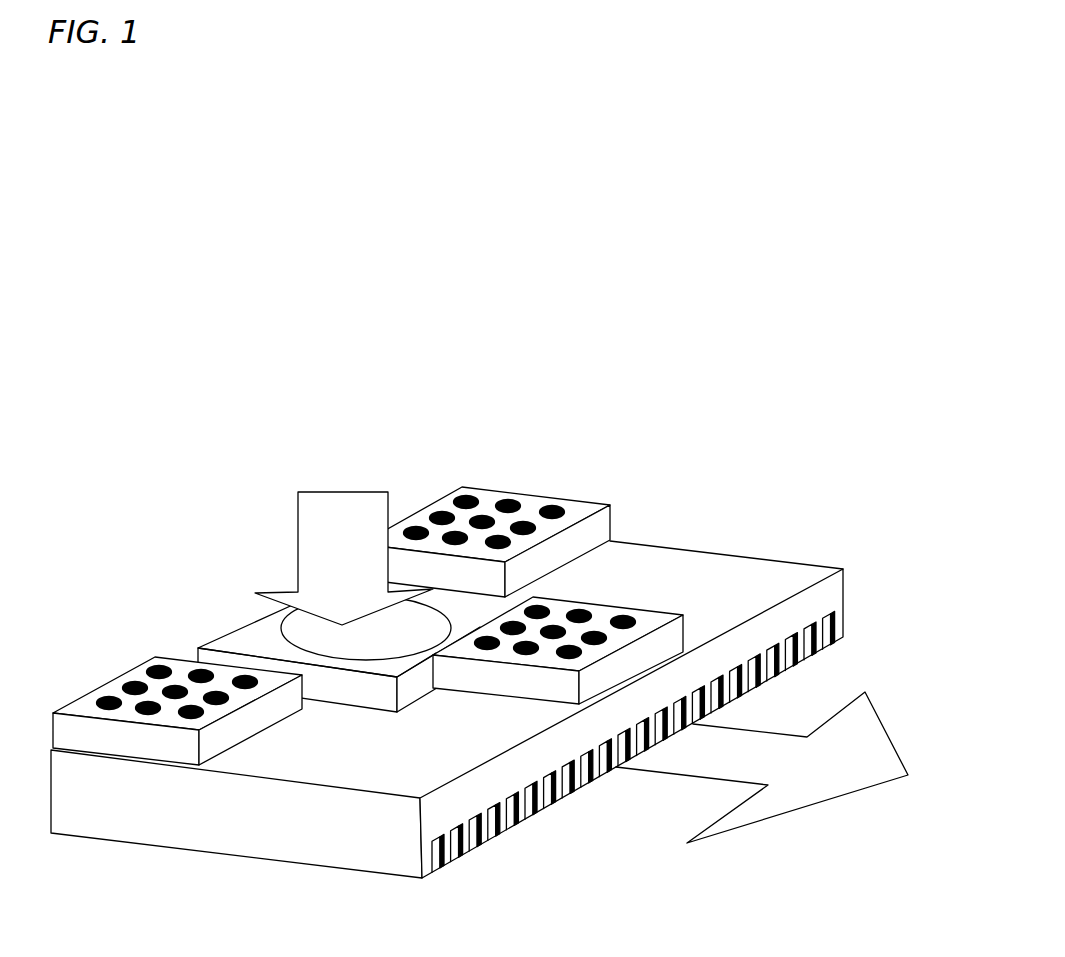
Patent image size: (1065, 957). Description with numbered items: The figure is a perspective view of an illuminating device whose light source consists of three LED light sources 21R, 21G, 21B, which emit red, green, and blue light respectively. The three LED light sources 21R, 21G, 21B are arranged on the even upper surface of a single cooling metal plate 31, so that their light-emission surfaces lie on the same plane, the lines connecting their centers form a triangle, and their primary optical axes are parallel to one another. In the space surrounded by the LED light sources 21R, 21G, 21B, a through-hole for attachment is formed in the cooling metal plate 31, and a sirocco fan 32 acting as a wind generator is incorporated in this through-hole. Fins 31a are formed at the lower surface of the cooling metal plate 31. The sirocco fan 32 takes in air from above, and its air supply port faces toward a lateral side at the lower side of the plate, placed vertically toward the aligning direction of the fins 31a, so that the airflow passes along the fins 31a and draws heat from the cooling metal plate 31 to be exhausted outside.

The LED light source 21R is at (583, 507).
The LED light source 21G is at (605, 685).
The LED light source 21B is at (155, 755).
The cooling metal plate 31 is at (767, 567).
The fins 31a is at (492, 833).
The sirocco fan 32 is at (377, 707).